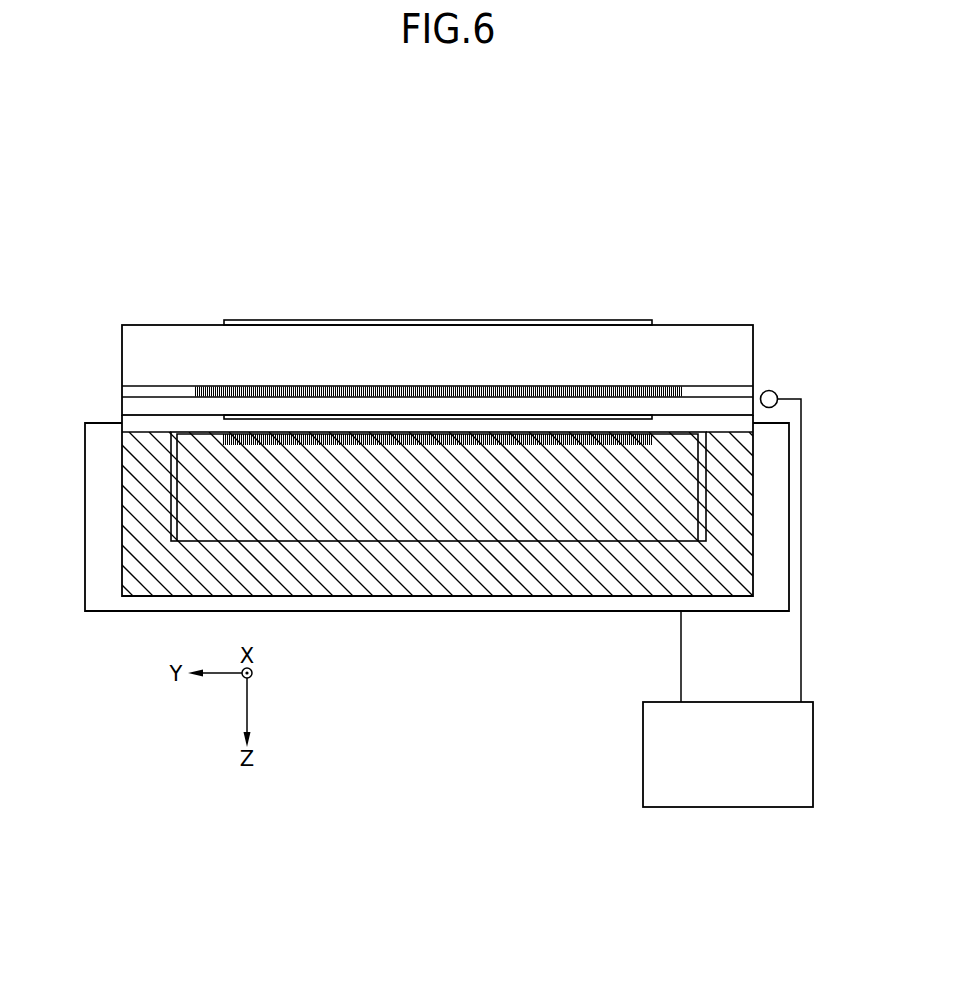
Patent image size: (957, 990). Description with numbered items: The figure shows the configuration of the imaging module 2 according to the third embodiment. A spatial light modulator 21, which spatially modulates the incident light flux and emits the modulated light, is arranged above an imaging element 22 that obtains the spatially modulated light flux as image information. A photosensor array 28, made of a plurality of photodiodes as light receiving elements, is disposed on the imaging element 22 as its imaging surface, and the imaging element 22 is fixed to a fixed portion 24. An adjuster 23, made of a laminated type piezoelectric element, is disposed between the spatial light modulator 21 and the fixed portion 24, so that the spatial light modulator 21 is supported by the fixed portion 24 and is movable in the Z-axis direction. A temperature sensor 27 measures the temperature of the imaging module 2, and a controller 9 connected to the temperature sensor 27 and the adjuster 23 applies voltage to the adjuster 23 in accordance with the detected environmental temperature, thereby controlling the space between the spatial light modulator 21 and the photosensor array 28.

The imaging module 2 is at (441, 290).
The spatial light modulator 21 is at (688, 325).
The imaging element 22 is at (433, 510).
The adjuster 23 is at (122, 420).
The fixed portion 24 is at (433, 581).
The temperature sensor 27 is at (769, 391).
The photosensor array 28 is at (657, 425).
The controller 9 is at (643, 752).